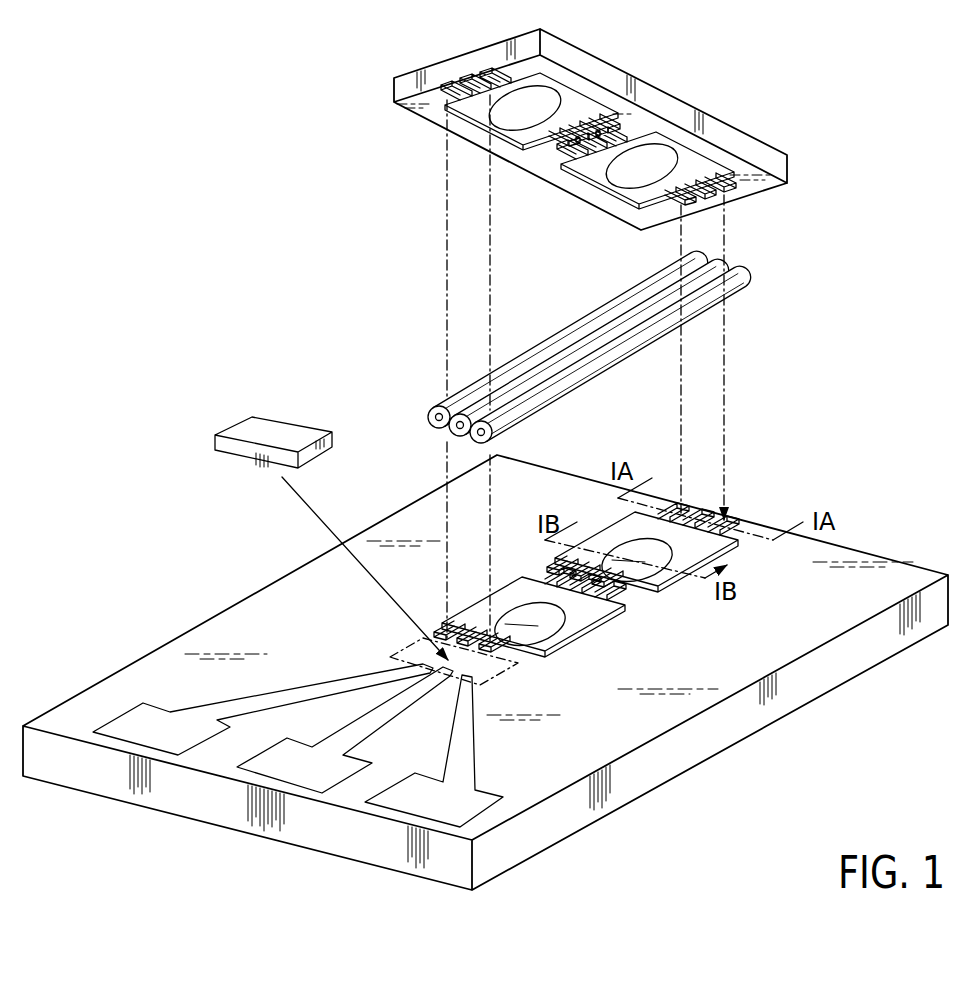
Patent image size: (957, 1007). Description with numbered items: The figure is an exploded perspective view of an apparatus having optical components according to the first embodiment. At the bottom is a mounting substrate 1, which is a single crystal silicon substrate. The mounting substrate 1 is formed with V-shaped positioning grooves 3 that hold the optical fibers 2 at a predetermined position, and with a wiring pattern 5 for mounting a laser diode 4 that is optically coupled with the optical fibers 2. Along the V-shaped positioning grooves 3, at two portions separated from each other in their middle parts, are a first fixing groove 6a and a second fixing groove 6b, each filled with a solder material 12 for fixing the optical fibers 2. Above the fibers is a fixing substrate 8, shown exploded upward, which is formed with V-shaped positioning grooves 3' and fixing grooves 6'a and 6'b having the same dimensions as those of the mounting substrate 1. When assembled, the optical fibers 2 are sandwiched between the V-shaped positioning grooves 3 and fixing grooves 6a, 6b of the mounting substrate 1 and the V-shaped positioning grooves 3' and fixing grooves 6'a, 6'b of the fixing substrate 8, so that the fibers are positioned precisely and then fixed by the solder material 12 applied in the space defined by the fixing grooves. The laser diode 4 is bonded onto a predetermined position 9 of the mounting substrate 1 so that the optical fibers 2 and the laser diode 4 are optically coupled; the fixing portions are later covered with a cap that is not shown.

The mounting substrate 1 is at (641, 798).
The optical fibers 2 is at (585, 323).
The V-shaped positioning grooves 3 is at (643, 577).
The V-shaped positioning grooves 3' is at (530, 148).
The laser diode 4 is at (265, 430).
The wiring pattern 5 is at (300, 685).
The first fixing groove 6a is at (595, 537).
The second fixing groove 6b is at (512, 600).
The fixing groove 6'a is at (557, 92).
The fixing groove 6'b is at (693, 168).
The fixing substrate 8 is at (737, 117).
The predetermined position 9 is at (520, 683).
The solder material 12 is at (647, 565).